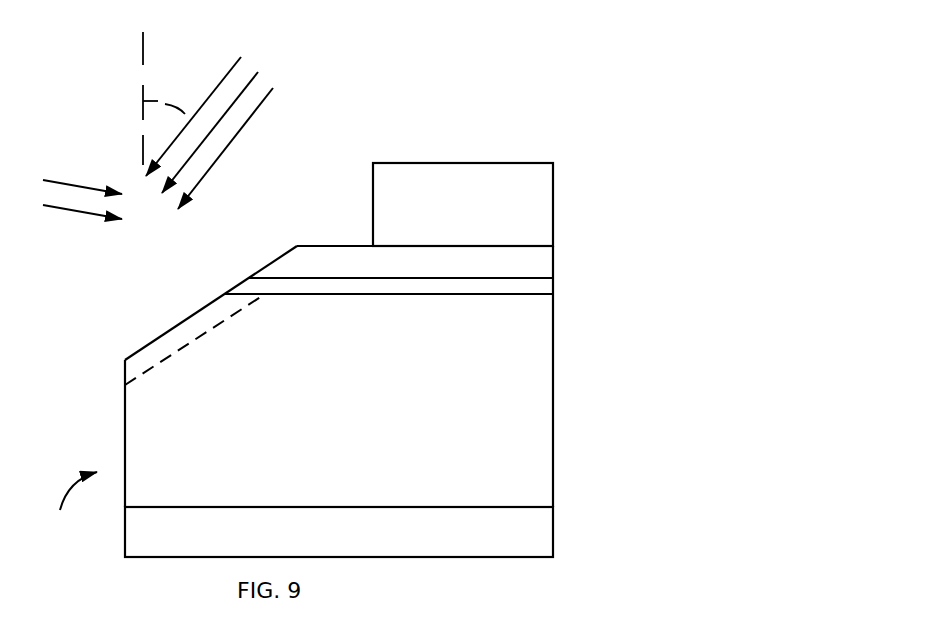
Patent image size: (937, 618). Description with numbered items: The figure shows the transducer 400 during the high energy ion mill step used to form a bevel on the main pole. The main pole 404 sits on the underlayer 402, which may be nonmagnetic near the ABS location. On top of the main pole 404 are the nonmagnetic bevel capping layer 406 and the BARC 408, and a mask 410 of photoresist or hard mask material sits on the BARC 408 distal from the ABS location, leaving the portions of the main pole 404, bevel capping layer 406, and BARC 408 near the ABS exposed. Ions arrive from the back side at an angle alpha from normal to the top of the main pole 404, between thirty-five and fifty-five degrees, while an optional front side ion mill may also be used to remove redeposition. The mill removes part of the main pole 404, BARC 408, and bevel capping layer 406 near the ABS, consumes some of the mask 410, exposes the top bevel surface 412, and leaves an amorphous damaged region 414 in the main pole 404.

The transducer 400 is at (294, 27).
The underlayer 402 is at (554, 543).
The main pole 404 is at (554, 375).
The bevel capping layer 406 is at (240, 283).
The BARC 408 is at (288, 247).
The mask 410 is at (555, 190).
The top bevel surface 412 is at (173, 305).
The damaged region 414 is at (172, 370).